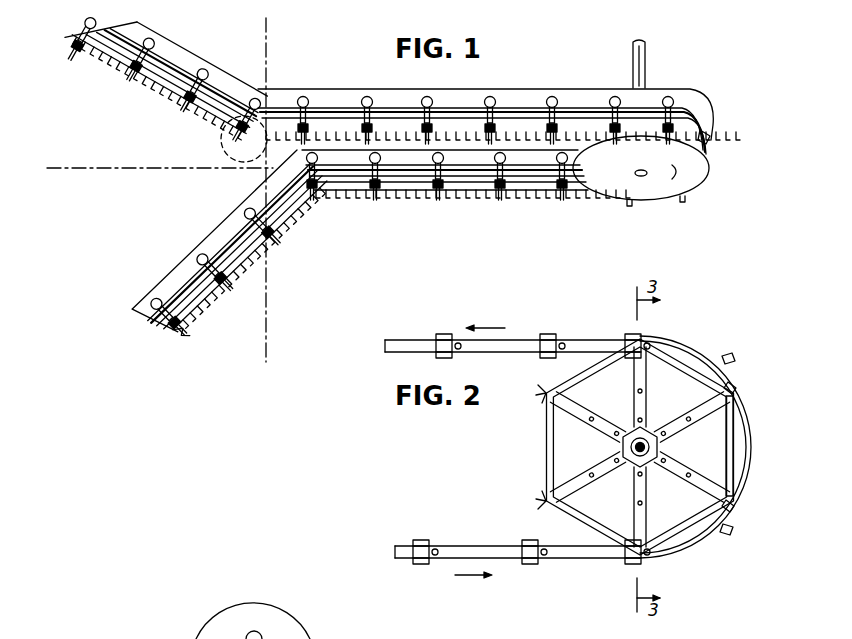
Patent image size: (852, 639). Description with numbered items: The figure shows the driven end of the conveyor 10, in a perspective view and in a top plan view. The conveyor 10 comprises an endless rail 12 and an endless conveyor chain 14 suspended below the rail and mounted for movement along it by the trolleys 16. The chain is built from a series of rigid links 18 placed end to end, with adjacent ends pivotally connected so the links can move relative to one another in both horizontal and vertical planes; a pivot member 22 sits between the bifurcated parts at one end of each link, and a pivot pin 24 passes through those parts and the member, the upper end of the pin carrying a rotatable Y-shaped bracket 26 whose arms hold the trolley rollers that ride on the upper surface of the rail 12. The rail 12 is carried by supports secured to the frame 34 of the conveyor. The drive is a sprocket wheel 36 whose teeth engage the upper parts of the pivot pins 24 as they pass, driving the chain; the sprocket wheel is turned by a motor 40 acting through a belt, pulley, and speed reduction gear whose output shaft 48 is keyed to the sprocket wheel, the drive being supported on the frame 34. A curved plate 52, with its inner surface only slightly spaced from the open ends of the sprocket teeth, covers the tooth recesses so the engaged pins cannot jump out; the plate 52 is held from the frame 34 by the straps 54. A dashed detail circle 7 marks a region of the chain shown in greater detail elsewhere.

In FIG. 1, the detail circle 7 is at (222, 150).
In FIG. 1, the conveyor 10 is at (572, 80).
In FIG. 1, the endless rail 12 is at (688, 118).
In FIG. 1, the endless conveyor chain 14 is at (482, 196).
In FIG. 2, the endless conveyor chain 14 is at (572, 345).
In FIG. 1, the trolley 16 is at (150, 47).
In FIG. 1, the rigid link 18 is at (150, 83).
In FIG. 2, the pivot member 22 is at (437, 348).
In FIG. 1, the pivot pin 24 is at (600, 140).
In FIG. 2, the pivot pin 24 is at (536, 348).
In FIG. 1, the Y-shaped bracket 26 is at (372, 112).
In FIG. 1, the frame 34 is at (468, 90).
In FIG. 2, the sprocket wheel 36 is at (552, 450).
In FIG. 2, the motor 40 is at (215, 618).
In FIG. 2, the output shaft 48 is at (644, 442).
In FIG. 2, the curved plate 52 is at (748, 416).
In FIG. 2, the strap 54 is at (729, 362).